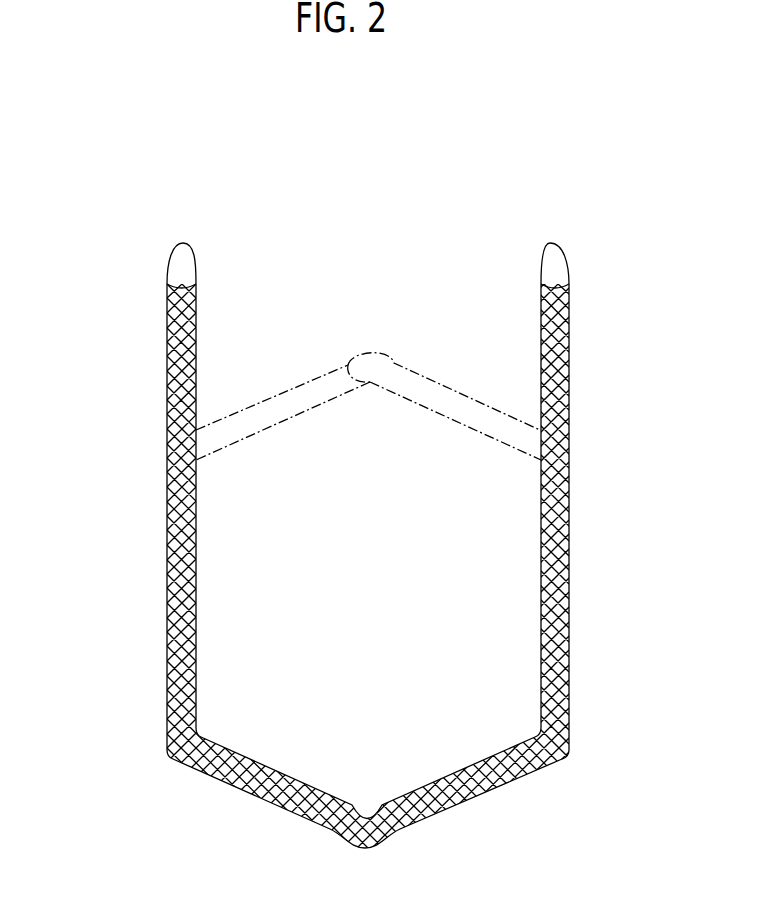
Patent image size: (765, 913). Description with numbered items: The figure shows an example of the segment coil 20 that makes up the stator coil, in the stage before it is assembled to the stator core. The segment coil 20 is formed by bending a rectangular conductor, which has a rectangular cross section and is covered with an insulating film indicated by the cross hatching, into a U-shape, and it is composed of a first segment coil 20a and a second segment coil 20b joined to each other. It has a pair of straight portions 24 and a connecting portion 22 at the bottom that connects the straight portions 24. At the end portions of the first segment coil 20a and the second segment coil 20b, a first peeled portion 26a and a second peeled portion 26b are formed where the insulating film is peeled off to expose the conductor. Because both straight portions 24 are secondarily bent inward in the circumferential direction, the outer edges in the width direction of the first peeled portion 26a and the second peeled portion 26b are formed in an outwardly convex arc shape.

The segment coil 20 is at (373, 177).
The first segment coil 20a is at (180, 407).
The second segment coil 20b is at (560, 406).
The connecting portion 22 is at (240, 782).
The straight portions 24 is at (167, 596).
The first peeled portion 26a is at (178, 272).
The second peeled portion 26b is at (557, 270).